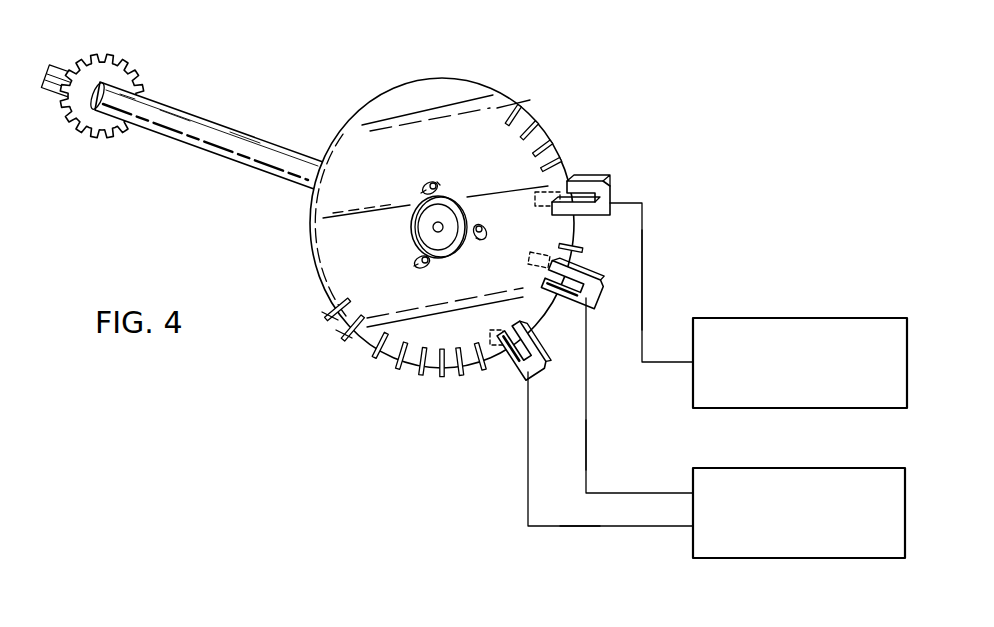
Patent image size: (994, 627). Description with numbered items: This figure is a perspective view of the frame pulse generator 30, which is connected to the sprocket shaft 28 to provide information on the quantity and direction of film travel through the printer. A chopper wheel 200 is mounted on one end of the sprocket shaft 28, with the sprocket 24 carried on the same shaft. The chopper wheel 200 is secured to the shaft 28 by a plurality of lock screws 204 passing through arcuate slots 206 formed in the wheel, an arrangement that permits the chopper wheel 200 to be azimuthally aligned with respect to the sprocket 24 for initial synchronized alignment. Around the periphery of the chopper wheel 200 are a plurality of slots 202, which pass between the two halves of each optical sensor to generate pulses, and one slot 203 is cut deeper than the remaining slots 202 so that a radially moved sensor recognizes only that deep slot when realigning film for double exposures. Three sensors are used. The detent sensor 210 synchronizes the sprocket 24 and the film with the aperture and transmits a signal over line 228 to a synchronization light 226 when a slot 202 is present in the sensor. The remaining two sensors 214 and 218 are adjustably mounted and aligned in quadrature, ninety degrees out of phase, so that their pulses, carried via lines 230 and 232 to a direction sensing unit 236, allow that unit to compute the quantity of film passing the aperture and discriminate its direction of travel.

The sprocket 24 is at (120, 63).
The sprocket shaft 28 is at (243, 143).
The frame pulse generator 30 is at (585, 123).
The chopper wheel 200 is at (503, 95).
The slots 202 is at (365, 333).
The deep slot 203 is at (457, 364).
The lock screws 204 is at (428, 182).
The arcuate slots 206 is at (483, 222).
The detent sensor 210 is at (612, 187).
The sensor 214 is at (600, 303).
The sensor 218 is at (505, 368).
The synchronization light 226 is at (805, 293).
The line 228 is at (644, 240).
The line 230 is at (588, 455).
The line 232 is at (583, 528).
The direction sensing unit 236 is at (827, 558).